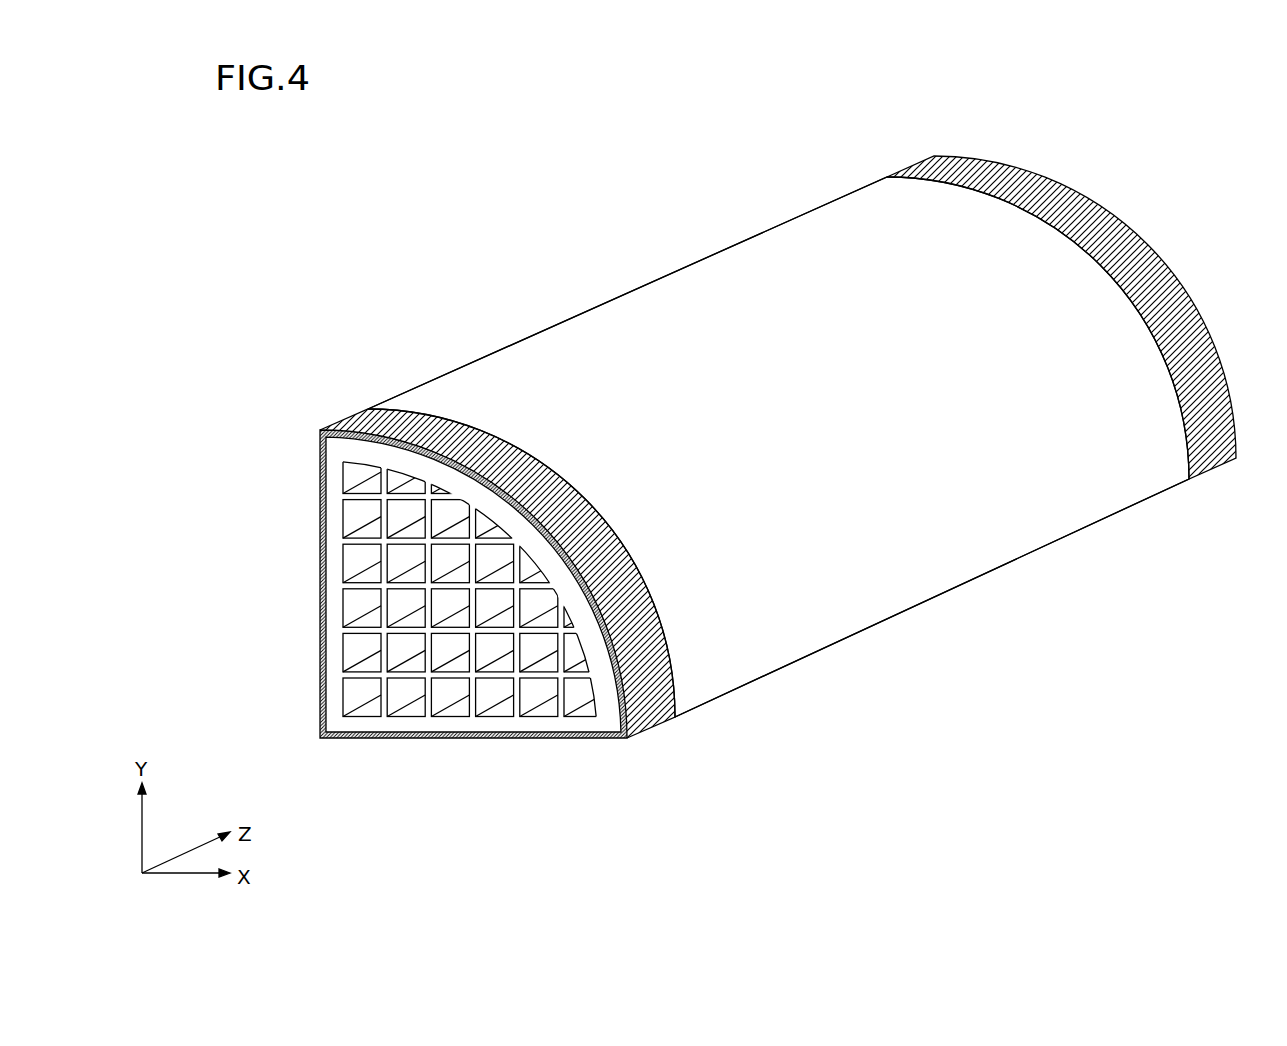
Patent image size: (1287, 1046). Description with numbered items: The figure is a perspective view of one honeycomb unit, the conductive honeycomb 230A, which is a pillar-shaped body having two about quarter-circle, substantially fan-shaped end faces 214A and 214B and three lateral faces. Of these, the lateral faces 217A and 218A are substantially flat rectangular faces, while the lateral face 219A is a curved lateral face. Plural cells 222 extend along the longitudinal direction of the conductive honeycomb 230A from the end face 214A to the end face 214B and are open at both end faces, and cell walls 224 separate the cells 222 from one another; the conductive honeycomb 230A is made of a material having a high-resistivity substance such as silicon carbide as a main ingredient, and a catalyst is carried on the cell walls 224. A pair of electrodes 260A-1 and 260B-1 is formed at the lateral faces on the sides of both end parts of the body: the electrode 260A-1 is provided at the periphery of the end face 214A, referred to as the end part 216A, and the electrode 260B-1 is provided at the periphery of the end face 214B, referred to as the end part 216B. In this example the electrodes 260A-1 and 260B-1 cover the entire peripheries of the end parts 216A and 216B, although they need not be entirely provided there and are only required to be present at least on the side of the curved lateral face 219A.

The conductive honeycomb 230A is at (505, 210).
The end face 214A is at (243, 549).
The end face 214B is at (1212, 274).
The end part 216A is at (313, 398).
The end part 216B is at (876, 136).
The lateral face 217A is at (600, 275).
The lateral face 218A is at (930, 619).
The curved lateral face 219A is at (787, 248).
The cells 222 is at (363, 522).
The cell walls 224 is at (363, 585).
The electrode 260A-1 is at (378, 410).
The electrode 260B-1 is at (942, 160).